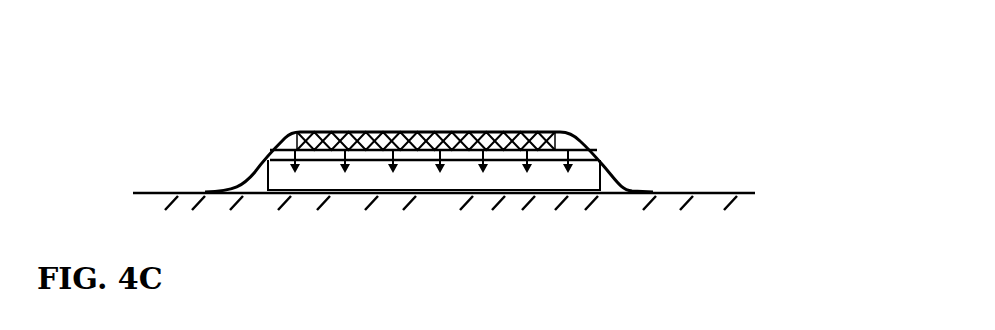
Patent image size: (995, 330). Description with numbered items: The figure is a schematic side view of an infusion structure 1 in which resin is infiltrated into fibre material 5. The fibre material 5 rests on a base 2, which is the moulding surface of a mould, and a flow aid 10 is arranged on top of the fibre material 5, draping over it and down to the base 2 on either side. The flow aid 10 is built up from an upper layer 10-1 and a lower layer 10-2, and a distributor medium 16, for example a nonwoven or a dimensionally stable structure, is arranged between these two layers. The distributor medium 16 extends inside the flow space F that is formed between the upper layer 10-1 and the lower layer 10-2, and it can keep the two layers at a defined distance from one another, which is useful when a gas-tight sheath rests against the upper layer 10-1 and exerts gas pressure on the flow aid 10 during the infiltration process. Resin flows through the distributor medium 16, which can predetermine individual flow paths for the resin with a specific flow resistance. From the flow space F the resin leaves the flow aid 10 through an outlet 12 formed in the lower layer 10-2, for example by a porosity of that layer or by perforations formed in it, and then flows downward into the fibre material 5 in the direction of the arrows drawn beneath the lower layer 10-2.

The infusion structure 1 is at (641, 94).
The base 2 is at (680, 235).
The fibre material 5 is at (538, 172).
The flow aid 10 is at (429, 116).
The upper layer 10-1 is at (573, 110).
The lower layer 10-2 is at (313, 130).
The outlet 12 is at (420, 163).
The distributor medium 16 is at (406, 127).
The flow space F is at (455, 128).